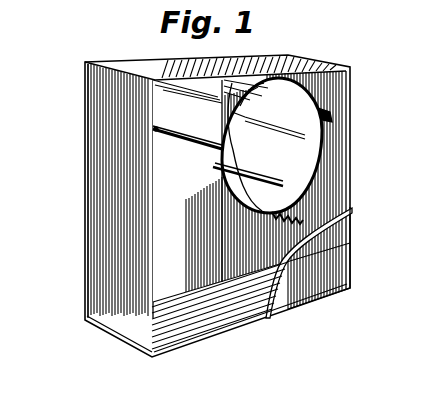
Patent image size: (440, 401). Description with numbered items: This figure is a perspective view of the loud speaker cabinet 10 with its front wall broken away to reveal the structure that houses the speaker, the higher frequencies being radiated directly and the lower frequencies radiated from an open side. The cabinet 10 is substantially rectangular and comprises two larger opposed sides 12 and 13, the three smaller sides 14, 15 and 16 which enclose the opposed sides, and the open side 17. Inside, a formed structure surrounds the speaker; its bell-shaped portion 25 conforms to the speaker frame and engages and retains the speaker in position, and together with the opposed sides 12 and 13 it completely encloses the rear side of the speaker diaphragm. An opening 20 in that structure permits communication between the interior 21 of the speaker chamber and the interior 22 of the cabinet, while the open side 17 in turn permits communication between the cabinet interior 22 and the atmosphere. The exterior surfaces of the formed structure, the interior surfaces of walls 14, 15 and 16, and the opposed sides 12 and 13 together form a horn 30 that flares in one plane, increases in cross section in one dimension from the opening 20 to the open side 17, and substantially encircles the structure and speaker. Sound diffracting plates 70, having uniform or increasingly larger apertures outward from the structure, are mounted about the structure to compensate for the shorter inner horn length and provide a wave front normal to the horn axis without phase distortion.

The cabinet 10 is at (82, 222).
The side 12 is at (337, 249).
The side 13 is at (95, 133).
The smaller side 14 is at (293, 60).
The smaller side 15 is at (338, 152).
The smaller side 16 is at (245, 308).
The open side 17 is at (107, 273).
The opening 20 is at (207, 150).
The interior 21 is at (267, 80).
The interior 22 is at (164, 265).
The bell-shaped portion 25 is at (227, 195).
The horn 30 is at (317, 193).
The sound diffracting plates 70 is at (318, 120).